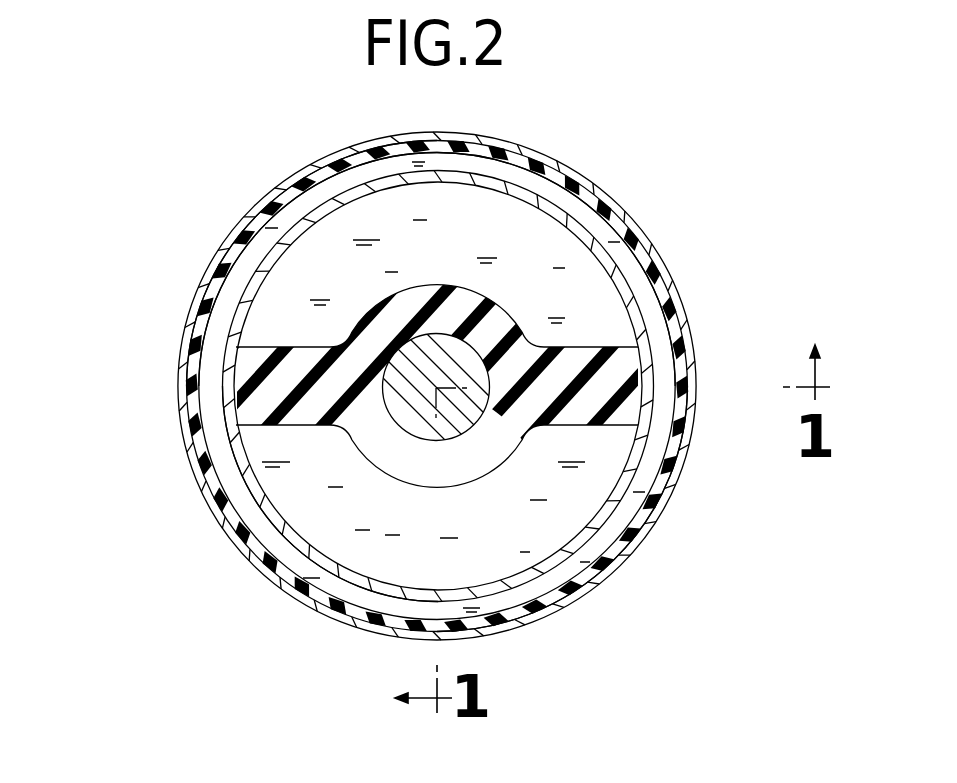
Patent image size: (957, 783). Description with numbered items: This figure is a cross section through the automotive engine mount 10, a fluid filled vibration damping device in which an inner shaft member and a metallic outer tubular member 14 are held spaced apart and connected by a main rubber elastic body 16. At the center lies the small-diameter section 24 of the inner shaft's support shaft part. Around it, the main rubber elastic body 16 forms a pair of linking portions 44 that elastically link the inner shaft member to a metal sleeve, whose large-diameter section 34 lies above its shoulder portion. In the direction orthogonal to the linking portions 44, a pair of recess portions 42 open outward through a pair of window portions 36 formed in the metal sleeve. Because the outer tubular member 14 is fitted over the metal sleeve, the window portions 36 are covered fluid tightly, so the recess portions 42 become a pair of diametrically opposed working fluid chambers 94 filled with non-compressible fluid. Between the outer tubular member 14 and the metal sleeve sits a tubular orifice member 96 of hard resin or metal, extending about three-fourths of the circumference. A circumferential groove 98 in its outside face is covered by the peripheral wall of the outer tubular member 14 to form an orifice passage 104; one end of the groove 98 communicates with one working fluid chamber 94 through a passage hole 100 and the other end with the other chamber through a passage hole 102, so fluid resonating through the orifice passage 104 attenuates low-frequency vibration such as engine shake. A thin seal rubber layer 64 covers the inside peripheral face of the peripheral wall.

The automotive engine mount 10 is at (648, 188).
The outer tubular member 14 is at (532, 617).
The main rubber elastic body 16 is at (305, 537).
The small-diameter section 24 is at (466, 353).
The large-diameter section 34 is at (204, 357).
The window portion 36 is at (233, 348).
The recess portion 42 is at (290, 426).
The linking portion 44 is at (245, 388).
The seal rubber layer 64 is at (642, 506).
The working fluid chamber 94 is at (530, 232).
The tubular orifice member 96 is at (234, 305).
The groove 98 is at (262, 231).
The passage hole 100 is at (236, 265).
The passage hole 102 is at (255, 505).
The orifice passage 104 is at (636, 281).